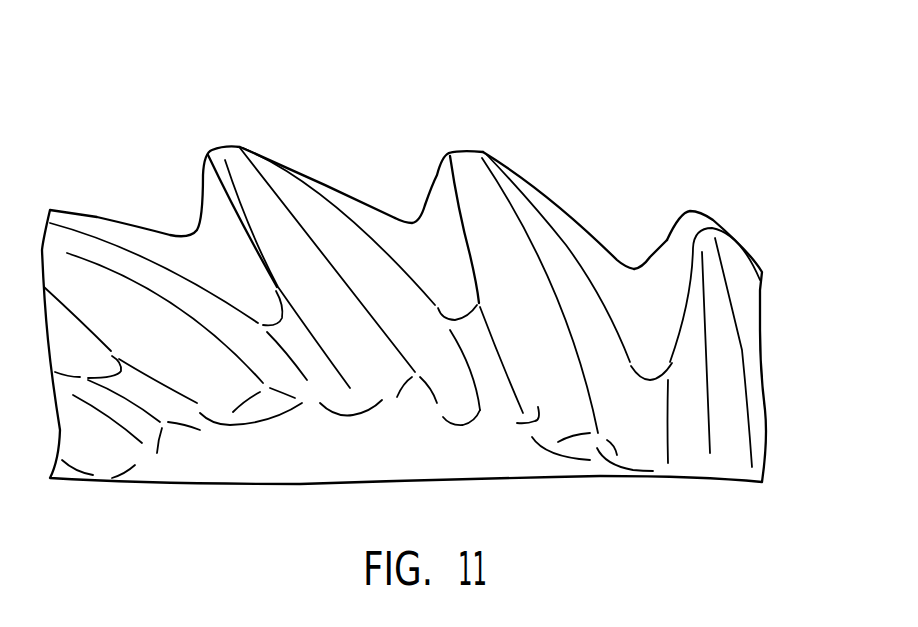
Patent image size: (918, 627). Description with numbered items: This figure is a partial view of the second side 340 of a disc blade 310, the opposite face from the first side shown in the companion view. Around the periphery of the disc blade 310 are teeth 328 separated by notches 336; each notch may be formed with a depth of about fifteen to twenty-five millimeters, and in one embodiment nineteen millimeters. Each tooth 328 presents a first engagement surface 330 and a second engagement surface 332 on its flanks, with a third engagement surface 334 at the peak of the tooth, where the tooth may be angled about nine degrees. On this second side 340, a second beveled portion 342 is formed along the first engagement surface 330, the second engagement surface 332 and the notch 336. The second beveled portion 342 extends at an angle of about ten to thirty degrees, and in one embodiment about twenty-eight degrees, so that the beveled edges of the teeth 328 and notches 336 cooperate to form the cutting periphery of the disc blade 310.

The disc blade 310 is at (104, 114).
The tooth 328 is at (250, 193).
The first engagement surface 330 is at (438, 168).
The second engagement surface 332 is at (557, 203).
The third engagement surface 334 is at (476, 150).
The notch 336 is at (410, 233).
The second side 340 is at (753, 385).
The second beveled portion 342 is at (611, 270).